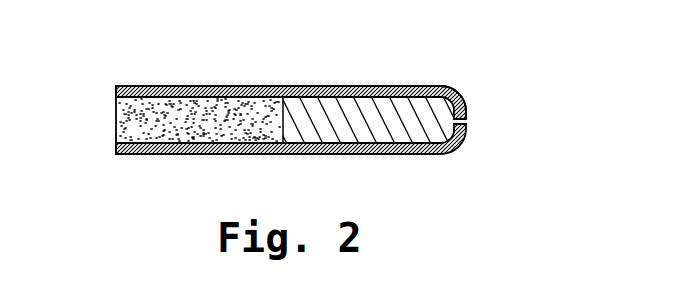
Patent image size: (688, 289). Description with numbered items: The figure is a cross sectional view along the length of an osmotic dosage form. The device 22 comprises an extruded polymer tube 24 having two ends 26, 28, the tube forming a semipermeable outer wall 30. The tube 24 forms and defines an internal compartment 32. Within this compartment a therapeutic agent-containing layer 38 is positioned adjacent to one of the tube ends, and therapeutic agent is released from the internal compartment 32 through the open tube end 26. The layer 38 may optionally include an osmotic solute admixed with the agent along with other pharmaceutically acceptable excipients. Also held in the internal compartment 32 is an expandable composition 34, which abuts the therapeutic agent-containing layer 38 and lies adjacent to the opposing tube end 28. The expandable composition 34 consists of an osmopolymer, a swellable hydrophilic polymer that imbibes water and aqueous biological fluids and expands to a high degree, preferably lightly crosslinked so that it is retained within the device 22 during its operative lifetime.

The device 22 is at (298, 117).
The extruded polymer tube 24 is at (388, 77).
The open tube end 26 is at (116, 92).
The tube end 28 is at (459, 98).
The semipermeable outer wall 30 is at (260, 90).
The internal compartment 32 is at (463, 122).
The expandable composition 34 is at (333, 108).
The therapeutic agent-containing layer 38 is at (197, 108).